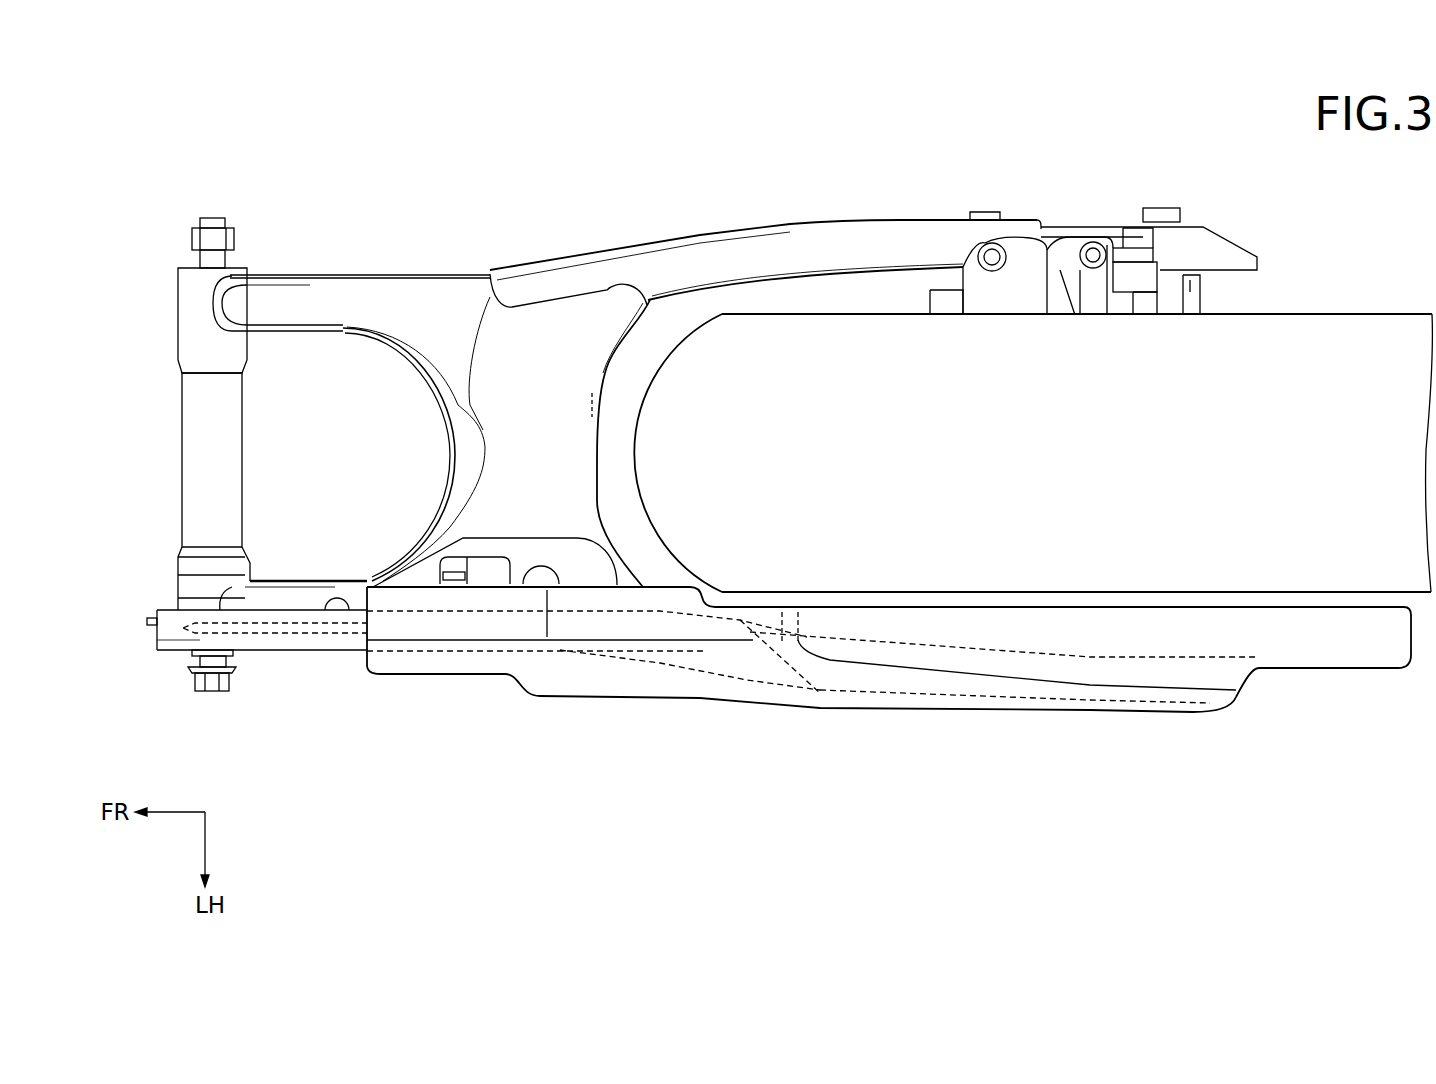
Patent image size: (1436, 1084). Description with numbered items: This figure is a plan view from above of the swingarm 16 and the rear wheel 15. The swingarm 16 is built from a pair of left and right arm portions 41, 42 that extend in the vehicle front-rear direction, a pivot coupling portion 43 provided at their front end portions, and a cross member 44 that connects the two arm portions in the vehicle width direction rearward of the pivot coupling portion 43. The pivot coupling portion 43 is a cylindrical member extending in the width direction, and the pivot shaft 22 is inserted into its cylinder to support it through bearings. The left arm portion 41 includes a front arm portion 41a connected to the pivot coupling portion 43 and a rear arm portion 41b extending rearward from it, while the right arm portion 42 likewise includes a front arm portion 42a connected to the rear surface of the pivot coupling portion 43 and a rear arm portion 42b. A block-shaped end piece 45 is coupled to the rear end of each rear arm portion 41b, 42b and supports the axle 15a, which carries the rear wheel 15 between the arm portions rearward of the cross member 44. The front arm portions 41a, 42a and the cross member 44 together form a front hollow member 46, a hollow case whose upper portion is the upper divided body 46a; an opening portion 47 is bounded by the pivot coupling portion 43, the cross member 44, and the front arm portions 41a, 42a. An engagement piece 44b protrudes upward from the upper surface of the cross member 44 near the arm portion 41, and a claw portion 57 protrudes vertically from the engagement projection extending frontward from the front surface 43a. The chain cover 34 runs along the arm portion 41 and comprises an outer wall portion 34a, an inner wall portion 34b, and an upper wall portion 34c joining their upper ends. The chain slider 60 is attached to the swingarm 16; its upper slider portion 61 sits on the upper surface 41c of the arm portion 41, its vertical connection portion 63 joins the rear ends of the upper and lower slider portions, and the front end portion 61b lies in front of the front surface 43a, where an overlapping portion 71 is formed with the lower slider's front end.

The rear wheel 15 is at (1313, 313).
The axle 15a is at (1160, 208).
The swingarm 16 is at (323, 250).
The pivot shaft 22 is at (212, 692).
The chain cover 34 is at (1303, 672).
The outer wall portion 34a is at (587, 687).
The inner wall portion 34b is at (557, 567).
The upper wall portion 34c is at (640, 623).
The left arm portion 41 is at (745, 698).
The front arm portion 41a is at (303, 600).
The rear arm portion 41b is at (960, 700).
The upper surface 41c is at (272, 605).
The right arm portion 42 is at (745, 220).
The front arm portion 42a is at (358, 270).
The rear arm portion 42b is at (887, 220).
The pivot coupling portion 43 is at (178, 440).
The front surface 43a is at (175, 582).
The cross member 44 is at (615, 470).
The engagement piece 44b is at (453, 600).
The end piece 45 is at (1215, 230).
The front hollow member 46 is at (413, 267).
The upper divided body 46a is at (467, 315).
The opening portion 47 is at (270, 370).
The claw portion 57 is at (147, 621).
The chain slider 60 is at (173, 600).
The upper slider portion 61 is at (342, 655).
The front end portion 61b is at (148, 650).
The vertical connection portion 63 is at (790, 620).
The overlapping portion 71 is at (152, 640).